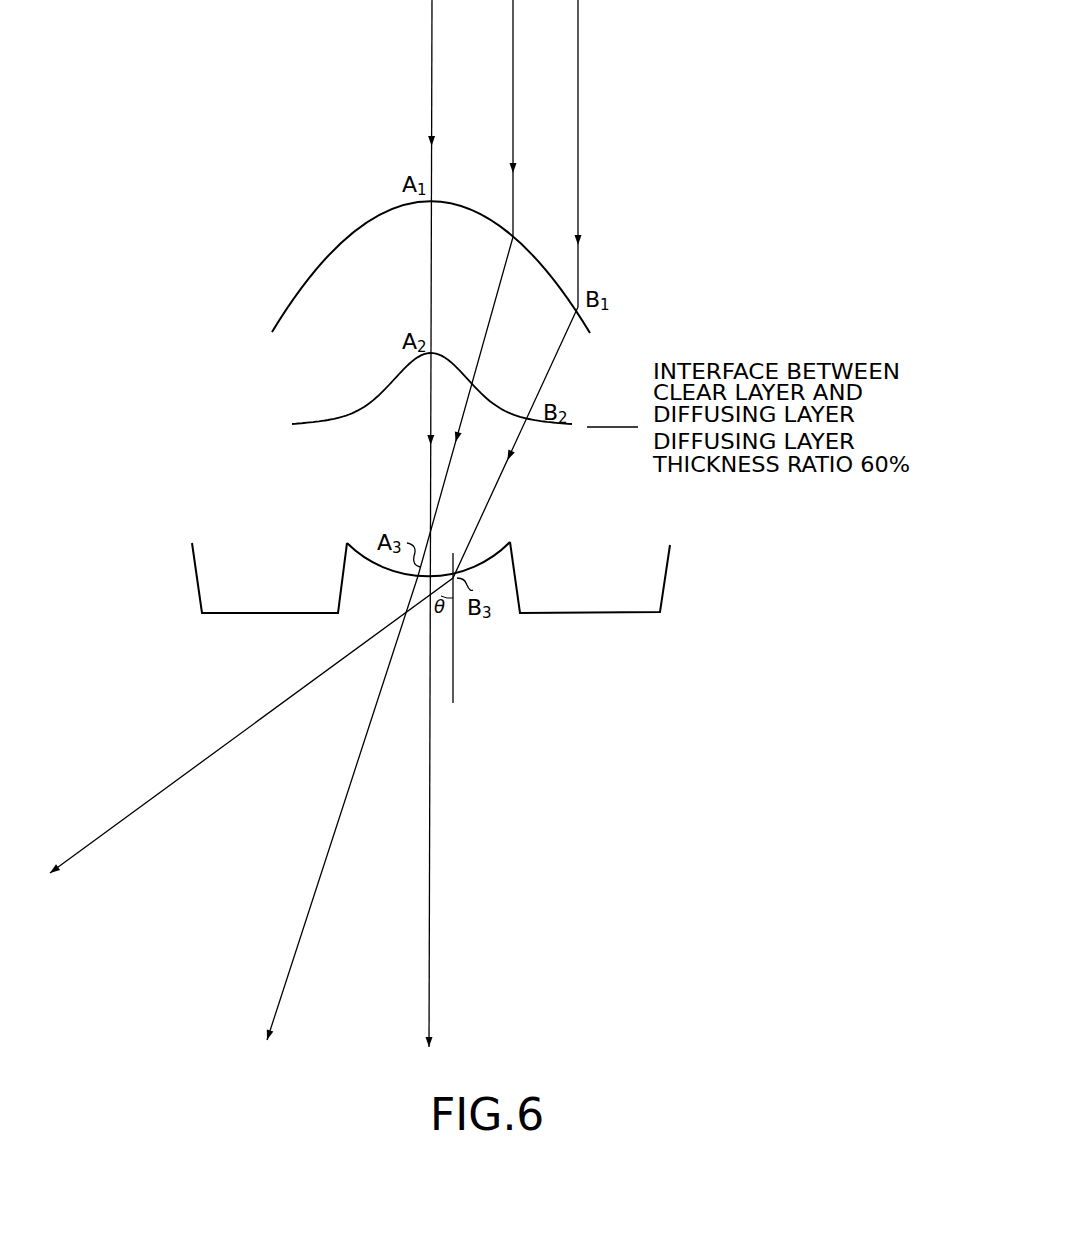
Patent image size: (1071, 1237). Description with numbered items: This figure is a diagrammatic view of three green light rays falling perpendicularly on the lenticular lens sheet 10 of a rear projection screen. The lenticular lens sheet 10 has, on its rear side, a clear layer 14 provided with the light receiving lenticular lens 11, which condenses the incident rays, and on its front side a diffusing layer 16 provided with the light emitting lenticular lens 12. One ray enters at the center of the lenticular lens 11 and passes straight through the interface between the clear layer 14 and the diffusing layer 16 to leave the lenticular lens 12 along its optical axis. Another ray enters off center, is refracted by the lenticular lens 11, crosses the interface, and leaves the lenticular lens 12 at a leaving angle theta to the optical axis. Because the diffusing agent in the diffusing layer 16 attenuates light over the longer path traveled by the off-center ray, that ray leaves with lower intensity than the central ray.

The lenticular lens sheet 10 is at (653, 586).
The light receiving lenticular lens 11 is at (328, 255).
The light emitting lenticular lens 12 is at (380, 568).
The clear layer 14 is at (305, 313).
The diffusing layer 16 is at (343, 473).